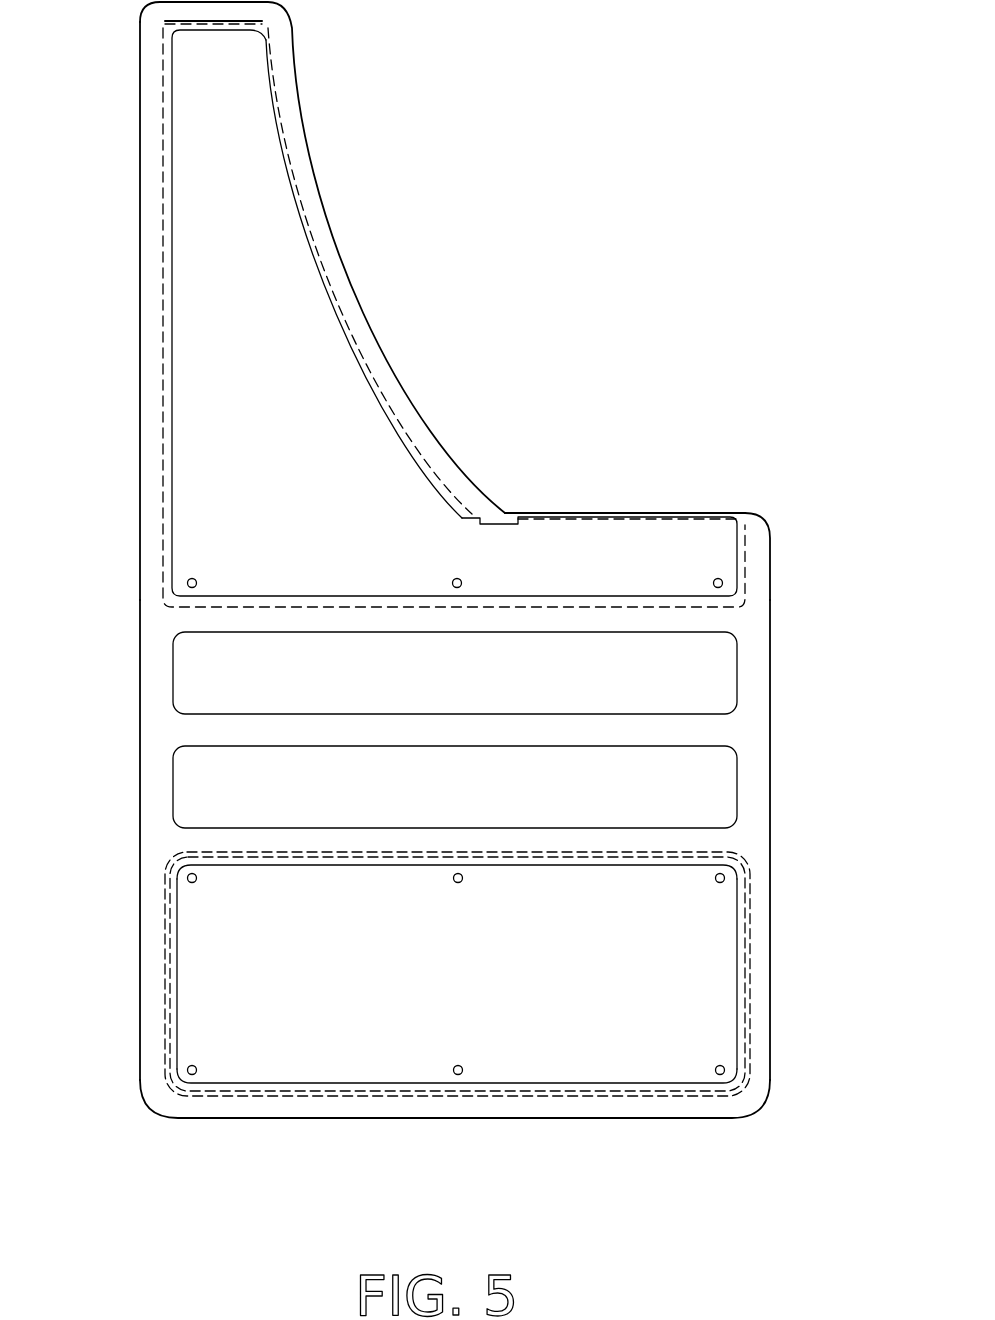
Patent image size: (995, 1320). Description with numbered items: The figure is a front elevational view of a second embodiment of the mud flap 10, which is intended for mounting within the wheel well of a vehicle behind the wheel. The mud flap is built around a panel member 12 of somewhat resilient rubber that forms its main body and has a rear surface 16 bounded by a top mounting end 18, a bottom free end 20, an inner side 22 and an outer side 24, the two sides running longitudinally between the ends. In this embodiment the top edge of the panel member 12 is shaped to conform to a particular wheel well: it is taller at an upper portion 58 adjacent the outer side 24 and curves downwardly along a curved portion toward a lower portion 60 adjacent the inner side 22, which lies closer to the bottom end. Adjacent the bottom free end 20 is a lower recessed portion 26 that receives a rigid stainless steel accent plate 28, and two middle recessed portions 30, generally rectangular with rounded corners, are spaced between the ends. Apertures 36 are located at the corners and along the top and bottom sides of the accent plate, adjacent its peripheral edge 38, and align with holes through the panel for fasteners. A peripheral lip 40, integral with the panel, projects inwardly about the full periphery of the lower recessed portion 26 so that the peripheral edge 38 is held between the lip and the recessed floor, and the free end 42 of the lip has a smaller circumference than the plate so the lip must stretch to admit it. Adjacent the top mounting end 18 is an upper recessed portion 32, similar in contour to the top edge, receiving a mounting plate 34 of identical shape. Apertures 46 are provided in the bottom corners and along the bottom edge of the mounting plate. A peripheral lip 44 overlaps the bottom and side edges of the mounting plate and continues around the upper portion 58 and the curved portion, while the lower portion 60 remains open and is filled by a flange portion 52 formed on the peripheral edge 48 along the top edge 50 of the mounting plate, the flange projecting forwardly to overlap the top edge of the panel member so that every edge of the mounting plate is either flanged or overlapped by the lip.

The mud flap 10 is at (452, 599).
The panel member 12 is at (389, 394).
The rear surface 16 is at (468, 864).
The top mounting end 18 is at (355, 300).
The bottom free end 20 is at (447, 1118).
The inner side 22 is at (772, 898).
The outer side 24 is at (140, 880).
The lower recessed portion 26 is at (222, 966).
The accent plate 28 is at (210, 1010).
The middle recessed portions 30 is at (210, 675).
The upper recessed portion 32 is at (345, 430).
The mounting plate 34 is at (375, 468).
The apertures 36 is at (196, 882).
The peripheral edge 38 is at (563, 858).
The peripheral lip 40 is at (745, 935).
The free end 42 is at (738, 1000).
The peripheral lip 44 is at (172, 468).
The apertures 46 is at (197, 580).
The peripheral edge 48 is at (160, 398).
The top edge 50 is at (577, 519).
The flange portion 52 is at (638, 512).
The upper portion 58 is at (212, 22).
The lower portion 60 is at (553, 514).